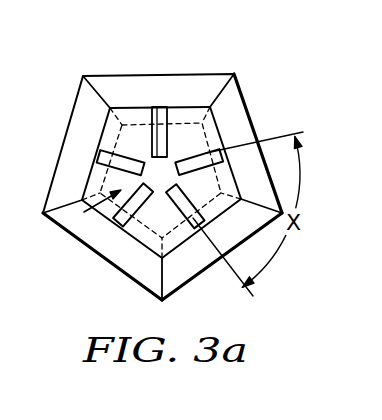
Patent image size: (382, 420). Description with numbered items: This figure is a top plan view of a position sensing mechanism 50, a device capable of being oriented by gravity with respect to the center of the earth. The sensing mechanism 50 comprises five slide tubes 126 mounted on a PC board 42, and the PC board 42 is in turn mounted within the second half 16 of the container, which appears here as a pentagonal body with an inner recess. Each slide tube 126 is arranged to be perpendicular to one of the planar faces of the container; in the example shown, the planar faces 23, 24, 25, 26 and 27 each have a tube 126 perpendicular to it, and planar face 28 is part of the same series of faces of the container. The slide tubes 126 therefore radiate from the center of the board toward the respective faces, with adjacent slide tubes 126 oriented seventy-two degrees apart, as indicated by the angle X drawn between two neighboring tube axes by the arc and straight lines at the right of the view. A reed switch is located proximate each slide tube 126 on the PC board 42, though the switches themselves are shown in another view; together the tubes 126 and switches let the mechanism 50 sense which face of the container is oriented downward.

The second half 16 is at (204, 74).
The planar face 23 is at (124, 78).
The planar face 24 is at (238, 96).
The planar face 25 is at (194, 276).
The planar face 26 is at (133, 273).
The planar face 27 is at (68, 147).
The planar face 28 is at (198, 147).
The PC board 42 is at (90, 197).
The position sensing mechanism 50 is at (73, 234).
The slide tube 126 is at (150, 140).